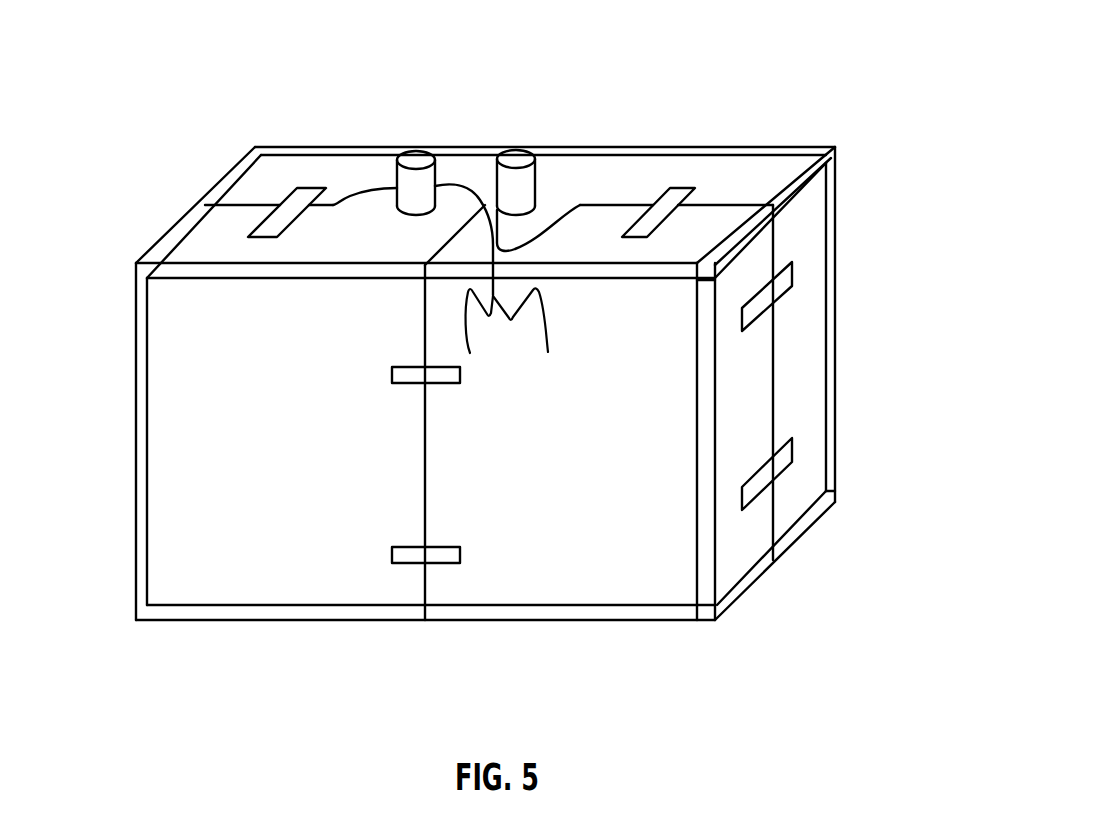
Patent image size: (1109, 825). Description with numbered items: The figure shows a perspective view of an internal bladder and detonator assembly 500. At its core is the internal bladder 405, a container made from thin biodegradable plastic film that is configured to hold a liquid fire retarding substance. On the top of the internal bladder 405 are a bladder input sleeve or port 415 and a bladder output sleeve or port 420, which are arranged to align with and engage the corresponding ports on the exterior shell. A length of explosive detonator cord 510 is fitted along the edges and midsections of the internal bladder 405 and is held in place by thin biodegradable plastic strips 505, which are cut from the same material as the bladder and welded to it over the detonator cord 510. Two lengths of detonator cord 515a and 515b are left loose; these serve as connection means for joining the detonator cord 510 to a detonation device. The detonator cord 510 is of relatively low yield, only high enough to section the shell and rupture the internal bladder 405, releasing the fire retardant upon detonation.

The internal bladder and detonator assembly 500 is at (845, 58).
The detonator cord 510 is at (165, 278).
The bladder input sleeve or port 415 is at (397, 180).
The bladder output sleeve or port 420 is at (537, 178).
The length of detonator cord 515a is at (470, 353).
The length of detonator cord 515b is at (548, 352).
The internal bladder 405 is at (792, 273).
The plastic strips 505 is at (792, 452).